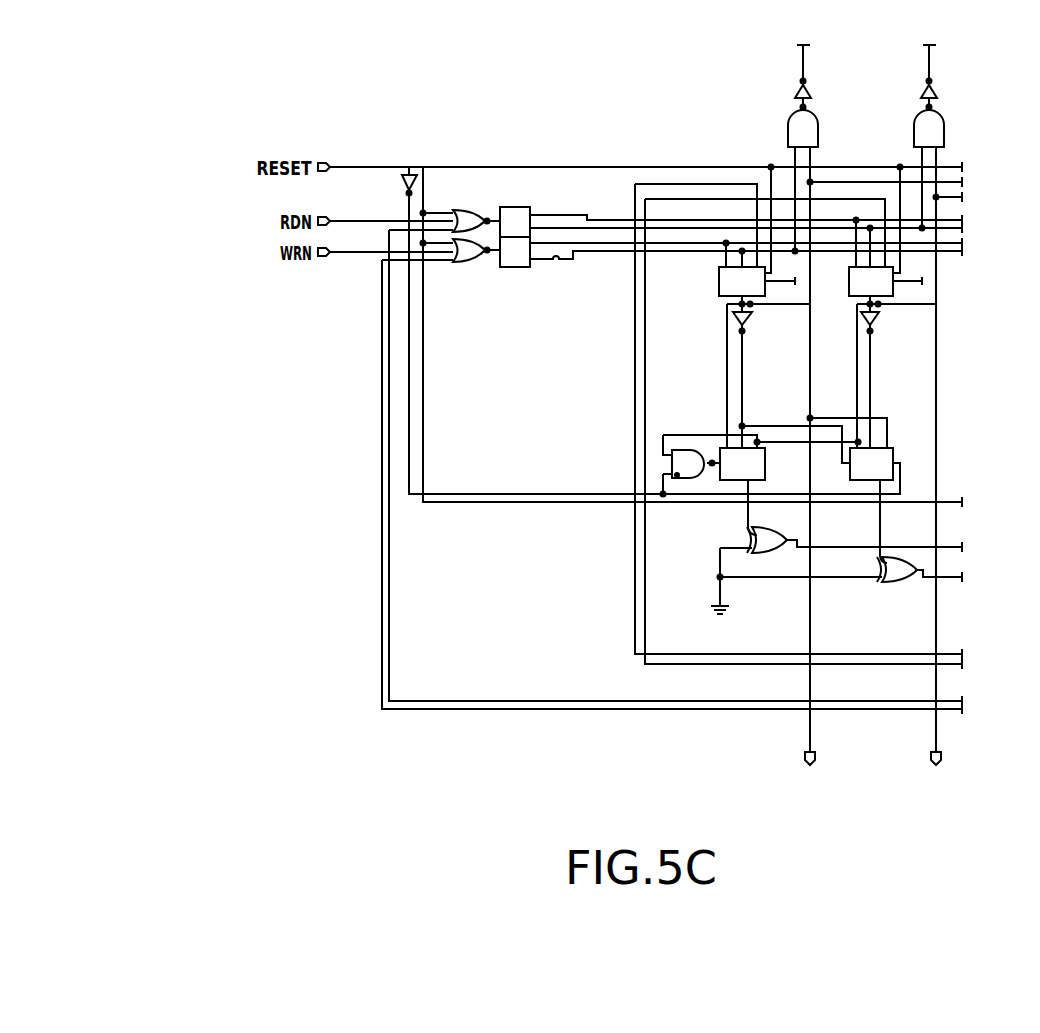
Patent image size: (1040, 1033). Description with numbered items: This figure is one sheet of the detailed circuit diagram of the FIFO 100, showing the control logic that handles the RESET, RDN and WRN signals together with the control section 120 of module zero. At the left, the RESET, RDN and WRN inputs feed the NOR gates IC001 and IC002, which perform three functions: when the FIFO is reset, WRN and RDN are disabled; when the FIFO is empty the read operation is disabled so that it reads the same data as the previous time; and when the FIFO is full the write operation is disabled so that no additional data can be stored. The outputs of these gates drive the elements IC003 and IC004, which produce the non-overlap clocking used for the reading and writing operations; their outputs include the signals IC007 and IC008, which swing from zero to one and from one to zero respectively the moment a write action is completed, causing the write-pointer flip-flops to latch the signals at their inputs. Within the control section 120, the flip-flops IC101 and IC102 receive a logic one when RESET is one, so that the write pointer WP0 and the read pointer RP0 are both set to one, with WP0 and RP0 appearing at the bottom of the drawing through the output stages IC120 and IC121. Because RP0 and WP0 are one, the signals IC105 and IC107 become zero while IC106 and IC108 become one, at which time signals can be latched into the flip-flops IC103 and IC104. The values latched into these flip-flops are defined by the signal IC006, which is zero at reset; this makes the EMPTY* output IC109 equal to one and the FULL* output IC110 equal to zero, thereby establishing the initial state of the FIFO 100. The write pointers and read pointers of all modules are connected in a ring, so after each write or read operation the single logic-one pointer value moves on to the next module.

The FIFO 100 is at (100, 364).
The control section 120 is at (774, 721).
The NOR gate IC001 is at (468, 208).
The NOR gate IC002 is at (468, 264).
The non-overlap clocking element IC003 is at (523, 211).
The non-overlap clocking element IC004 is at (523, 263).
The latch input signal IC006 is at (600, 466).
The write completion signal IC007 is at (550, 241).
The write completion signal IC008 is at (557, 259).
The flip-flop IC101 is at (764, 239).
The flip-flop IC102 is at (892, 239).
The flip-flop IC103 is at (762, 479).
The flip-flop IC104 is at (850, 489).
The latch enable signal IC105 is at (747, 378).
The latch enable signal IC106 is at (727, 378).
The latch enable signal IC107 is at (877, 378).
The latch enable signal IC108 is at (857, 378).
The EMPTY* output IC109 is at (897, 544).
The FULL* output IC110 is at (834, 560).
The write pointer output stage IC120 is at (857, 398).
The read pointer output stage IC121 is at (923, 398).